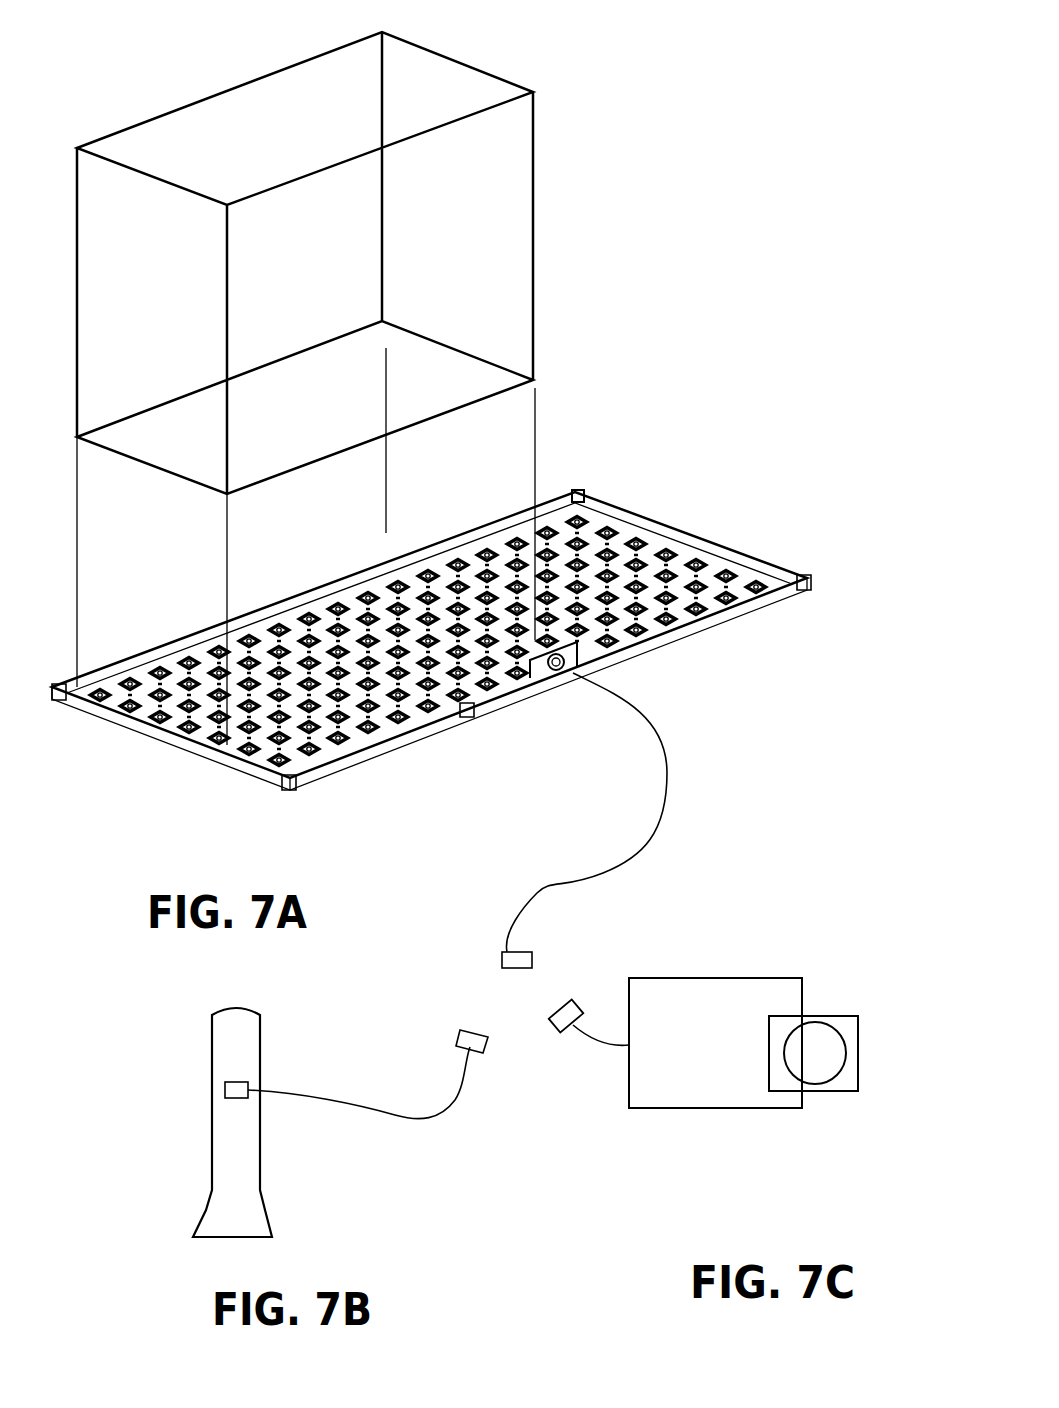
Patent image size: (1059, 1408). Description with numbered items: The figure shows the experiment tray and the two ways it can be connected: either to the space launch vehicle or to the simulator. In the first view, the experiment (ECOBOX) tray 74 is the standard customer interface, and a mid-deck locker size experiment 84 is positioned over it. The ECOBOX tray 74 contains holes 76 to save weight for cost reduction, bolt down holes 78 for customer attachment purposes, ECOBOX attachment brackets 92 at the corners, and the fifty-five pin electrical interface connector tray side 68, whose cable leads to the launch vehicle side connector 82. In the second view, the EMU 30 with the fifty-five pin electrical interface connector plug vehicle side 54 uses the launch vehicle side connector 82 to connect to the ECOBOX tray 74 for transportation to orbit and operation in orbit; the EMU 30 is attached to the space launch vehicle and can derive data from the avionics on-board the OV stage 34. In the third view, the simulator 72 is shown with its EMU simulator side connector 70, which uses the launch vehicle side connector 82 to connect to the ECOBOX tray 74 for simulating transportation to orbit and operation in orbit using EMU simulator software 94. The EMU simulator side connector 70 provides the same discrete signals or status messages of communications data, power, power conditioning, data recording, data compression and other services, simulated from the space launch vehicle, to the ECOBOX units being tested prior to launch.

In FIG. 7A, the mid-deck locker size experiment 84 is at (165, 182).
In FIG. 7A, the ECOBOX attachment brackets 92 is at (574, 497).
In FIG. 7A, the holes 76 is at (609, 535).
In FIG. 7A, the experiment tray 74 is at (760, 555).
In FIG. 7A, the bolt down holes 78 is at (137, 675).
In FIG. 7A, the tray side connector 68 is at (575, 672).
In FIG. 7A, the launch vehicle side connector 82 is at (500, 960).
In FIG. 7B, the OV stage 34 is at (215, 1040).
In FIG. 7B, the EMU 30 is at (237, 1098).
In FIG. 7B, the electrical interface connector plug vehicle side 54 is at (475, 1040).
In FIG. 7C, the EMU simulator side connector 70 is at (575, 1002).
In FIG. 7C, the simulator 72 is at (643, 1098).
In FIG. 7C, the EMU simulator software 94 is at (810, 1057).